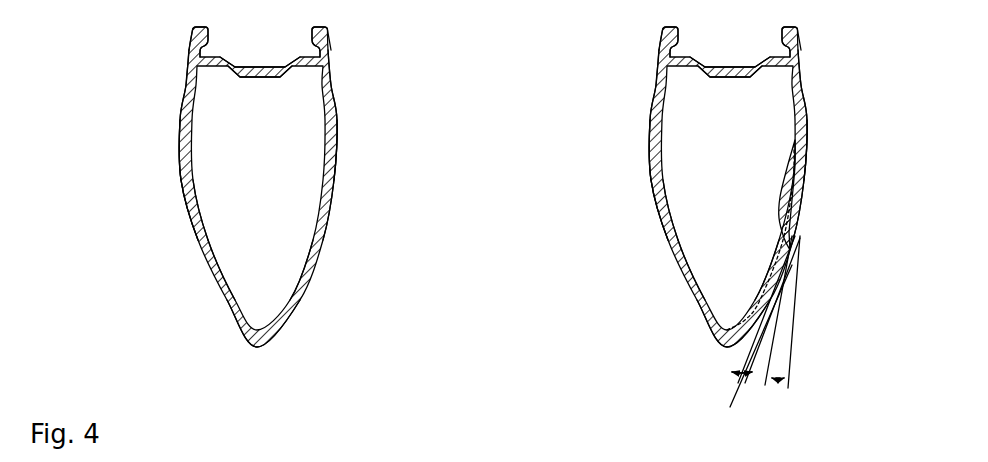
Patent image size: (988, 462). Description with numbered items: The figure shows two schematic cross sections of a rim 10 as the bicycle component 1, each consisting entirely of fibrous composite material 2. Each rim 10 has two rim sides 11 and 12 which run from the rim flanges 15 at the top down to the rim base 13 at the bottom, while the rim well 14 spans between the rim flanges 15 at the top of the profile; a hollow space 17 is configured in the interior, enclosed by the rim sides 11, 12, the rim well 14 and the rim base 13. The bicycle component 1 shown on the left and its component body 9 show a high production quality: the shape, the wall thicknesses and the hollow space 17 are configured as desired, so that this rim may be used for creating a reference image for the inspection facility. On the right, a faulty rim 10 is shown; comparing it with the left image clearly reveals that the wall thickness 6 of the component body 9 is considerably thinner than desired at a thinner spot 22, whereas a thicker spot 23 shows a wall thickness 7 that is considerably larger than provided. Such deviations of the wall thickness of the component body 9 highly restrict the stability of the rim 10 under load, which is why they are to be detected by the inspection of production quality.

The bicycle component 1 is at (106, 50).
The fibrous composite material 2 is at (186, 181).
The wall thickness 6 is at (740, 375).
The wall thickness 7 is at (794, 181).
The component body 9 is at (133, 146).
The rim 10 is at (394, 56).
The rim side 11 is at (179, 106).
The rim side 12 is at (343, 107).
The rim base 13 is at (255, 318).
The rim well 14 is at (259, 82).
The rim flanges 15 is at (184, 30).
The hollow space 17 is at (296, 192).
The thinner spot 22 is at (788, 187).
The thicker spot 23 is at (793, 262).